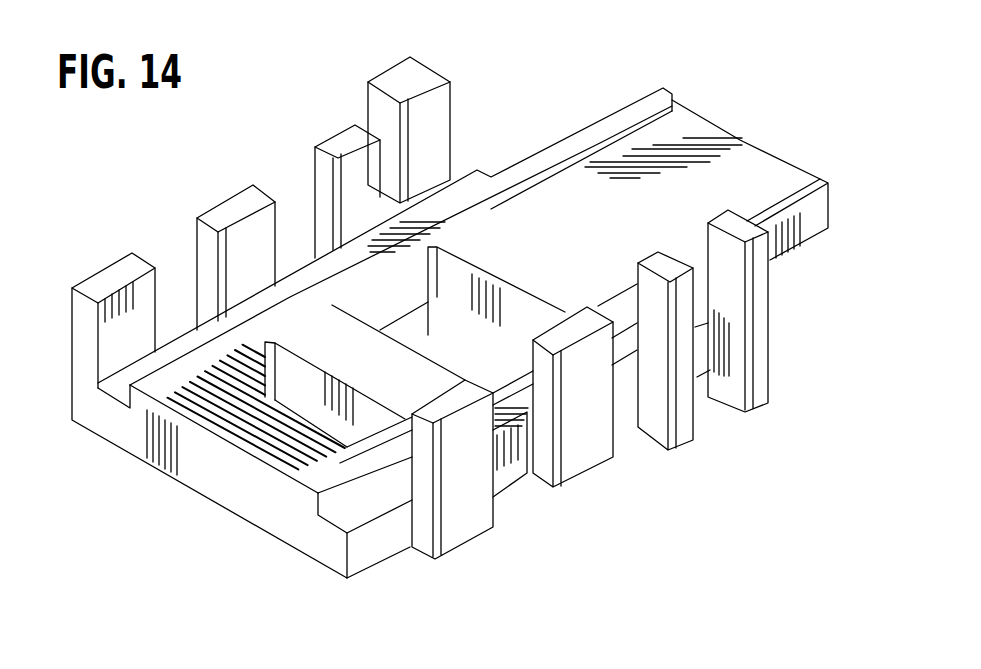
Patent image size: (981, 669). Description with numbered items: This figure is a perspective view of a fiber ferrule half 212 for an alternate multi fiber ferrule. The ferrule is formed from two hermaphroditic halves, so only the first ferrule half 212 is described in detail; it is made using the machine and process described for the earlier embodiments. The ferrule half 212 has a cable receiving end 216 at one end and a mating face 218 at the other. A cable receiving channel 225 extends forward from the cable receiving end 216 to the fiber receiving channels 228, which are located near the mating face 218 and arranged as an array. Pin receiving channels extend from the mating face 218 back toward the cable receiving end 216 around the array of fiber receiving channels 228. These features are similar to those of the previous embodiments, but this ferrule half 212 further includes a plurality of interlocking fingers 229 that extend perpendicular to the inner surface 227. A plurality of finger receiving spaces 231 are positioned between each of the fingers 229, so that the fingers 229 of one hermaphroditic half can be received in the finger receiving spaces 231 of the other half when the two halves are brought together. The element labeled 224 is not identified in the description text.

The first ferrule half 212 is at (813, 230).
The cable receiving end 216 is at (707, 123).
The mating face 218 is at (102, 423).
The front block 224 is at (333, 528).
The cable receiving channel 225 is at (603, 245).
The inner surface 227 is at (510, 177).
The fiber receiving channels 228 is at (222, 438).
The interlocking fingers 229 is at (95, 270).
The finger receiving spaces 231 is at (290, 180).